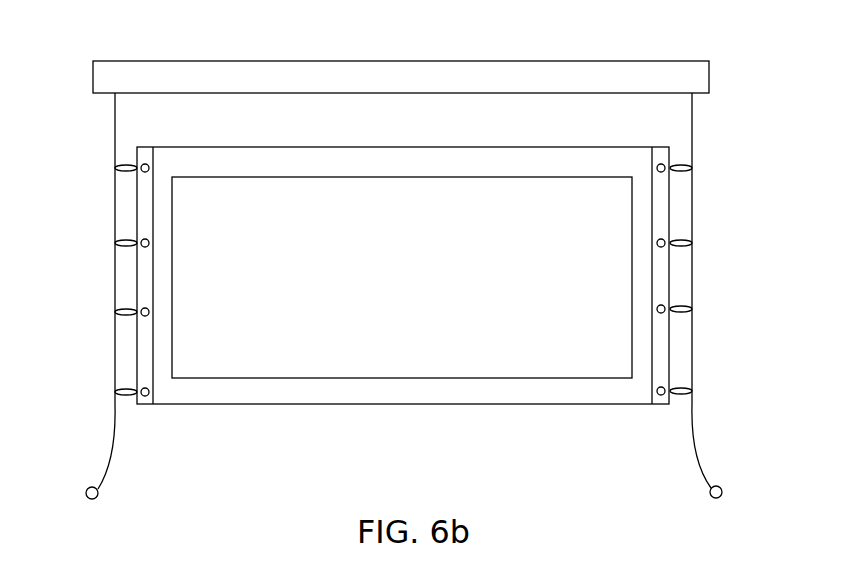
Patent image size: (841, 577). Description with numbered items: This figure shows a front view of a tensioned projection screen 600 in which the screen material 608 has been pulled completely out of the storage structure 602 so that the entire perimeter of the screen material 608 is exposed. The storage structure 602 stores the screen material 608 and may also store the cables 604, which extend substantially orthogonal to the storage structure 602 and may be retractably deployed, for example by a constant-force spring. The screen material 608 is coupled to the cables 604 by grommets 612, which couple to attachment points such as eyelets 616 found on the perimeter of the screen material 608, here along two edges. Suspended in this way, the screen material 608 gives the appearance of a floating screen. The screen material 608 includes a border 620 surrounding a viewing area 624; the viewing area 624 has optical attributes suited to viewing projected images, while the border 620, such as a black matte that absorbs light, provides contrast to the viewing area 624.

The tensioned projection screen 600 is at (774, 85).
The storage structure 602 is at (318, 60).
The cables 604 is at (110, 462).
The screen material 608 is at (325, 433).
The grommets 612 is at (118, 241).
The eyelets 616 is at (664, 302).
The border 620 is at (343, 167).
The viewing area 624 is at (423, 291).